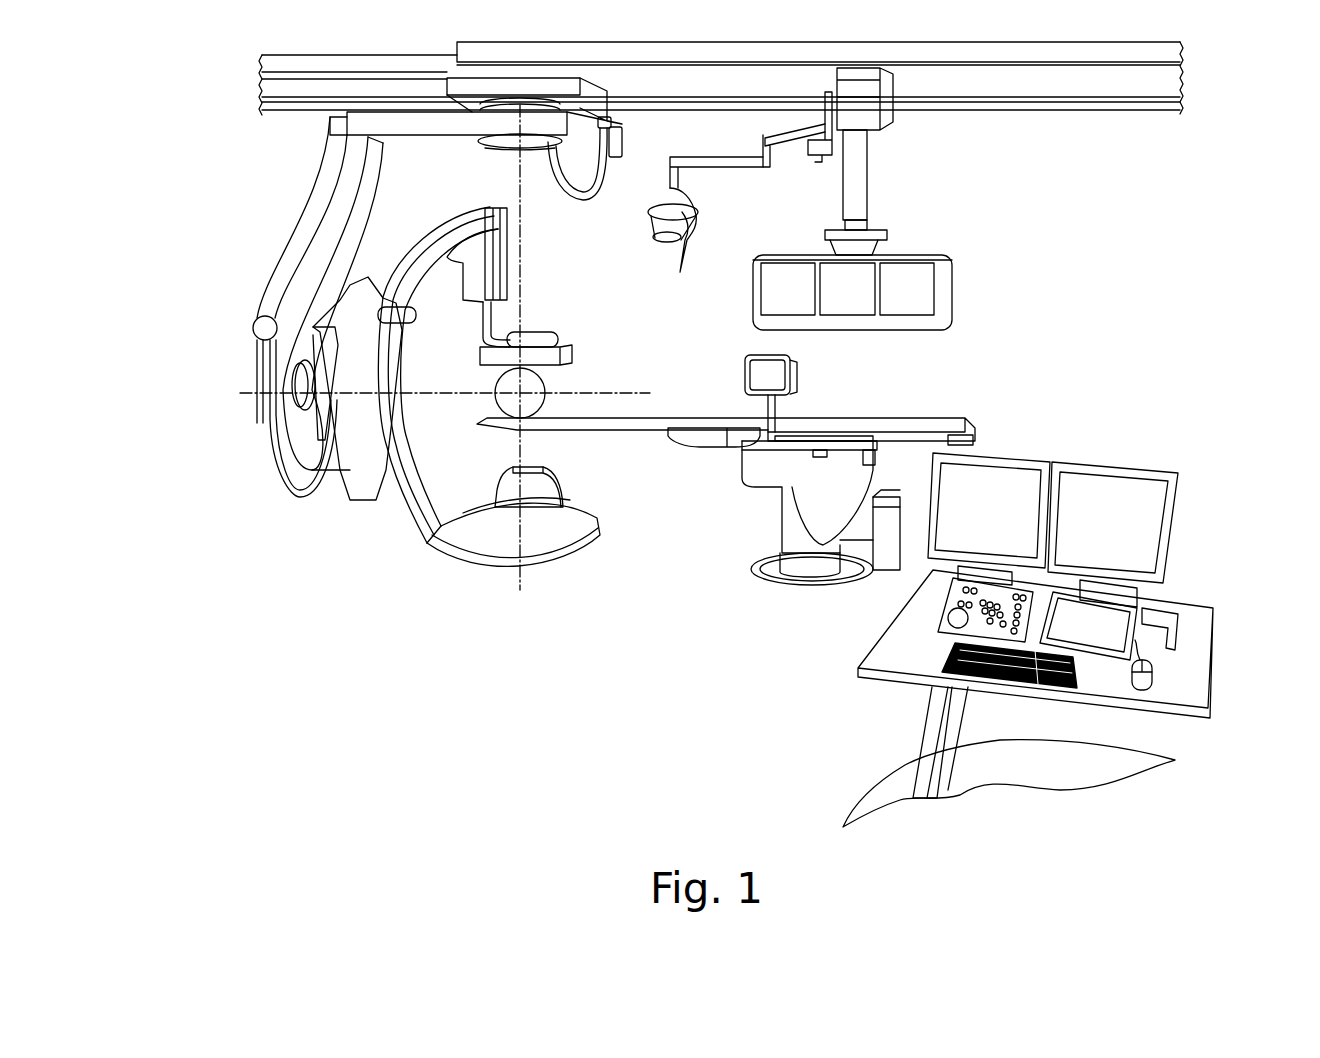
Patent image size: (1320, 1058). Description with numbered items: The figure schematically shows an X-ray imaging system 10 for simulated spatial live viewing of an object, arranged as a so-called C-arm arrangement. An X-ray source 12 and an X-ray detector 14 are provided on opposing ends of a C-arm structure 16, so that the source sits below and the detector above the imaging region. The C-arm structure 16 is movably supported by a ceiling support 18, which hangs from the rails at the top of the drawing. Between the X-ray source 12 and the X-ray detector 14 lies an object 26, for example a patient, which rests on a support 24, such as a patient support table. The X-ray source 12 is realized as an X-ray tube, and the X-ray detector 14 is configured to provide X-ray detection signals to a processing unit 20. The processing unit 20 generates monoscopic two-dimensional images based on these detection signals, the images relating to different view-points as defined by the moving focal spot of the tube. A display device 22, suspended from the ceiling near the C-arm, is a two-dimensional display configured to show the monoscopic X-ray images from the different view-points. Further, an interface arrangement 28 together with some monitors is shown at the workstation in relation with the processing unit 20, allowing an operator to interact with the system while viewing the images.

The X-ray imaging system 10 is at (222, 170).
The X-ray source 12 is at (565, 482).
The X-ray detector 14 is at (573, 352).
The C-arm structure 16 is at (385, 495).
The ceiling support 18 is at (287, 262).
The processing unit 20 is at (1001, 640).
The display device 22 is at (911, 252).
The support 24 is at (838, 413).
The object 26 is at (547, 386).
The interface arrangement 28 is at (1117, 683).